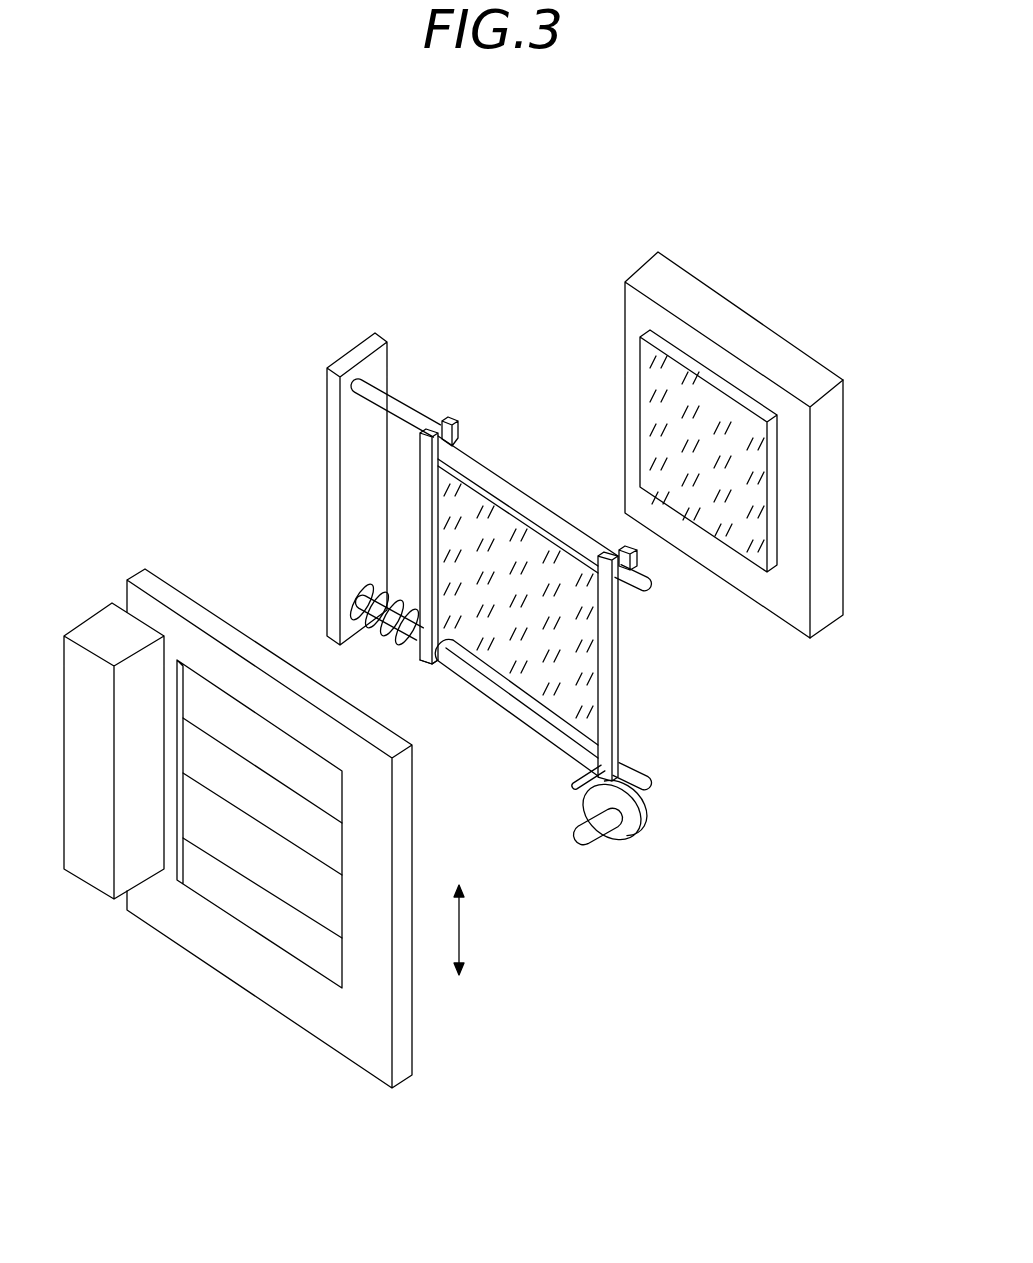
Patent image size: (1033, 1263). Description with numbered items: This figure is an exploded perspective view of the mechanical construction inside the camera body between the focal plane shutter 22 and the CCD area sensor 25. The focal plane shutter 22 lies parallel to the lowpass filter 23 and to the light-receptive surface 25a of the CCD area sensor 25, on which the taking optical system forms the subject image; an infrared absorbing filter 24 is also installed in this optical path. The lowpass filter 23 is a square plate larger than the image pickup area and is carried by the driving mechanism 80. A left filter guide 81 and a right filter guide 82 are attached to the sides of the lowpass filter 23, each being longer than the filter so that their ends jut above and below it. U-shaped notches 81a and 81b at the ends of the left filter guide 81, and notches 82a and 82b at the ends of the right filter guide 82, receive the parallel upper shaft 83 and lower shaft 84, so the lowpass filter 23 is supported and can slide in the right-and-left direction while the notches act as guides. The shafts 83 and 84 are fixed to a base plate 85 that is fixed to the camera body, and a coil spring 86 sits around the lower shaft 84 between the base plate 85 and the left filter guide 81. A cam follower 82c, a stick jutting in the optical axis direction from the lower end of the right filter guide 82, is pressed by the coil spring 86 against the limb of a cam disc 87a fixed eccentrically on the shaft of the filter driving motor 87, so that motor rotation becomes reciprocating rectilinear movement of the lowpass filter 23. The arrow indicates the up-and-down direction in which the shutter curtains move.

The focal plane shutter 22 is at (145, 569).
The lowpass filter 23 is at (530, 530).
The infrared absorbing filter 24 is at (717, 372).
The CCD area sensor 25 is at (657, 254).
The light-receptive surface 25a is at (808, 545).
The driving mechanism 80 is at (309, 253).
The left filter guide 81 is at (417, 474).
The upper notch 81a is at (451, 417).
The lower notch 81b is at (437, 668).
The right filter guide 82 is at (620, 677).
The upper notch 82a is at (627, 590).
The lower notch 82b is at (634, 761).
The cam follower 82c is at (576, 790).
The upper shaft 83 is at (583, 533).
The lower shaft 84 is at (496, 690).
The base plate 85 is at (330, 485).
The coil spring 86 is at (373, 627).
The filter driving motor 87 is at (600, 858).
The cam disc 87a is at (630, 830).